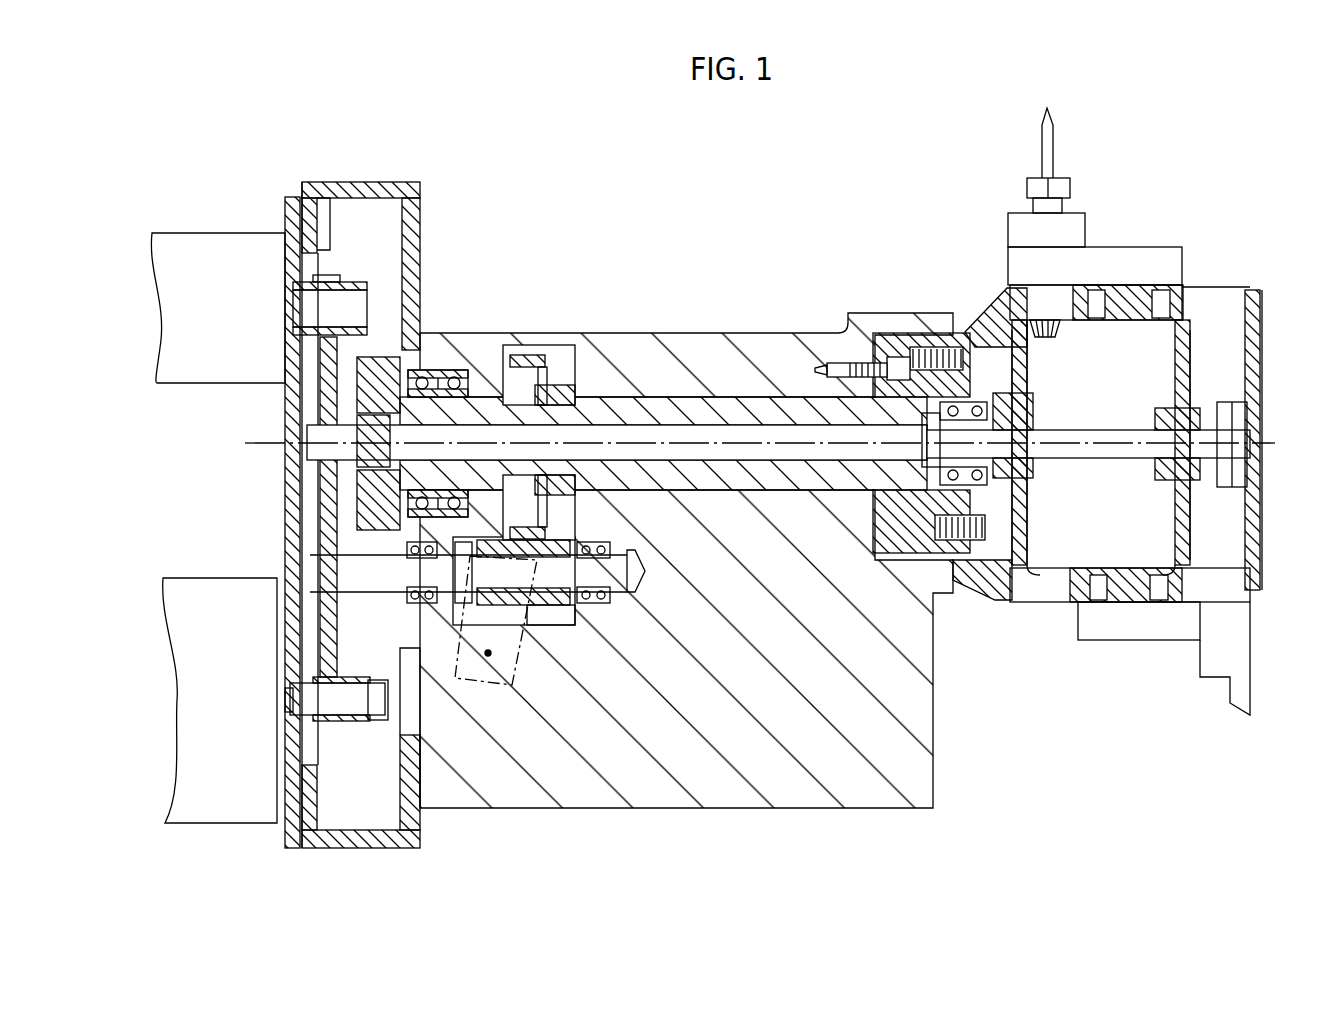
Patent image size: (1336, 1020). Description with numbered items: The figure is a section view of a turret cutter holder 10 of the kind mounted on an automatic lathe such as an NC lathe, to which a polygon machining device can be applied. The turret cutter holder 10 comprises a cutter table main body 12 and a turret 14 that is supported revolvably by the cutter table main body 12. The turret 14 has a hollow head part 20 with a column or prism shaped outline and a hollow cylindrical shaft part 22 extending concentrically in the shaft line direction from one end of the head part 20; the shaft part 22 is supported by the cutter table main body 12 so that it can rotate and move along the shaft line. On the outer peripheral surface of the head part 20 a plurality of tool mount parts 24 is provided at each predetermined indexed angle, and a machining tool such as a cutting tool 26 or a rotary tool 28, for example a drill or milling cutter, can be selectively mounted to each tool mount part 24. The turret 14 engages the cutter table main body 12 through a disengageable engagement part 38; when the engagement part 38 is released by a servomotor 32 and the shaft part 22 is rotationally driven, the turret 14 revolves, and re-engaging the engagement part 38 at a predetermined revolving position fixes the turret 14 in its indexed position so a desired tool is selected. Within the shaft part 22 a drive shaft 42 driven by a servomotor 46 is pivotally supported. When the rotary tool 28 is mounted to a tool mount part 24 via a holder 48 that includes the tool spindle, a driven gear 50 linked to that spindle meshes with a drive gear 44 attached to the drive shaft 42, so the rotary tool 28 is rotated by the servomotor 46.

The turret cutter holder 10 is at (676, 243).
The cutter table main body 12 is at (893, 808).
The turret 14 is at (1015, 604).
The head part 20 is at (1247, 290).
The shaft part 22 is at (713, 395).
The tool mount part 24 is at (1128, 283).
The cutting tool 26 is at (1245, 696).
The rotary tool 28 is at (1058, 165).
The servomotor 32 is at (212, 770).
The engagement part 38 is at (927, 332).
The drive shaft 42 is at (677, 430).
The drive gear 44 is at (1020, 347).
The servomotor 46 is at (172, 288).
The holder 48 is at (1087, 232).
The driven gear 50 is at (1060, 330).